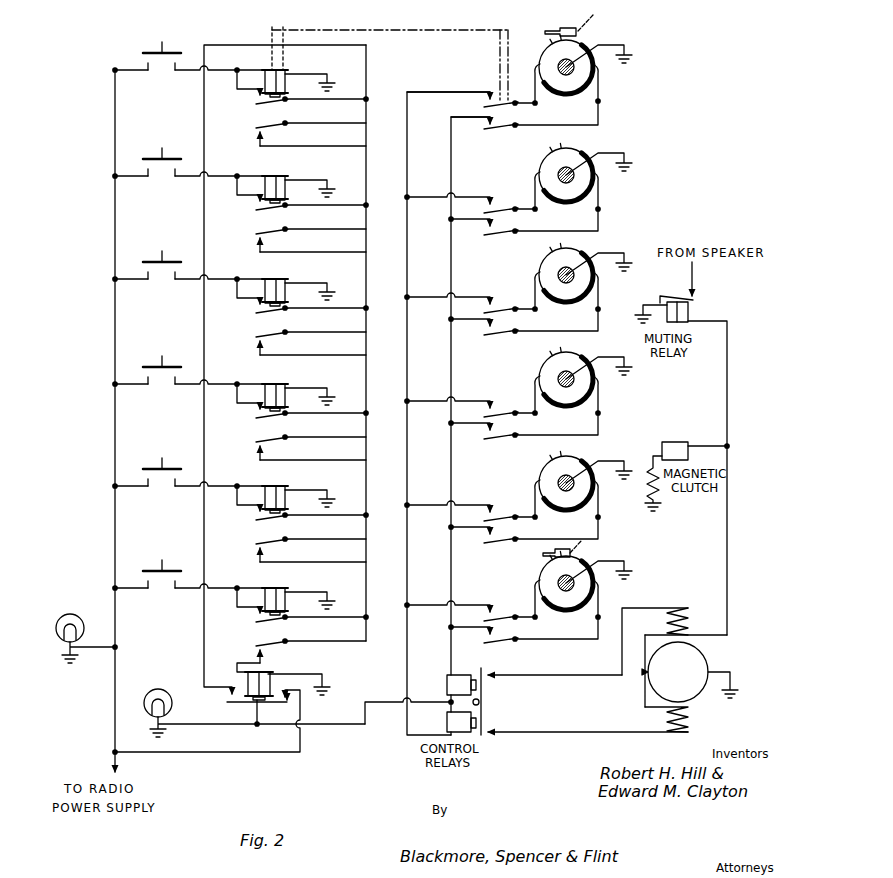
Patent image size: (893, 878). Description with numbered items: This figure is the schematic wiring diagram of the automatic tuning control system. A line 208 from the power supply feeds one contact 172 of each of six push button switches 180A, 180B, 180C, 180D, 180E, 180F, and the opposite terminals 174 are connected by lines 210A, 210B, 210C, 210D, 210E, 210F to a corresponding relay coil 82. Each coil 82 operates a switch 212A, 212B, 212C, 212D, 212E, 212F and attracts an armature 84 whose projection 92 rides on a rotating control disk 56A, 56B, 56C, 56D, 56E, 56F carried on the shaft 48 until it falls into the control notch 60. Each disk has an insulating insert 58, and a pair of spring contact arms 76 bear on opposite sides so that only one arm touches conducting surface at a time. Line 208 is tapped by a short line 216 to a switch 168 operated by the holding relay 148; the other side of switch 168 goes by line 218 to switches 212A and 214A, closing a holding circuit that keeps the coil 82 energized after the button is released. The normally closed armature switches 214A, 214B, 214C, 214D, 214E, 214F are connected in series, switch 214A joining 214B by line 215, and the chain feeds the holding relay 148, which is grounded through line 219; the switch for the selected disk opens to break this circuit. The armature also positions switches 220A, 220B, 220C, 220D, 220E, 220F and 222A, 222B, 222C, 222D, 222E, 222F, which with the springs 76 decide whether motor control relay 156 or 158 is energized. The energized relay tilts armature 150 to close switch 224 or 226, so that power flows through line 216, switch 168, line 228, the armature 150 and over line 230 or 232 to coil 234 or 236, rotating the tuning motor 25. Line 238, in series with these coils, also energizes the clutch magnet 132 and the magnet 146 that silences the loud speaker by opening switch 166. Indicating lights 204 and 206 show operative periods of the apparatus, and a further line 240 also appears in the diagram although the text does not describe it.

The tuning motor 25 is at (700, 666).
The shaft 48 is at (568, 95).
The rotating control disk 56A is at (585, 52).
The rotating control disk 56B is at (577, 151).
The rotating control disk 56C is at (585, 265).
The rotating control disk 56D is at (585, 369).
The rotating control disk 56E is at (585, 473).
The rotating control disk 56F is at (585, 573).
The insert 58 is at (602, 99).
The control notch 60 is at (558, 40).
The spring contact arms 76 is at (537, 74).
The relay coil 82 is at (284, 70).
The armature 84 is at (566, 31).
The projection 92 is at (595, 276).
The magnet 132 is at (675, 442).
The magnet 146 is at (683, 308).
The holding relay 148 is at (252, 684).
The tilting armature 150 is at (480, 702).
The motor control relay 156 is at (447, 724).
The motor control relay 158 is at (447, 684).
The switch 166 is at (690, 297).
The switch 168 is at (290, 696).
The contact 172 is at (146, 64).
The terminal 174 is at (189, 53).
The control button 180A is at (162, 43).
The control button 180B is at (166, 138).
The control button 180C is at (167, 241).
The control button 180D is at (167, 346).
The control button 180E is at (166, 448).
The control button 180F is at (166, 550).
The indicating light 204 is at (85, 613).
The indicating light 206 is at (176, 692).
The line 208 is at (113, 226).
The line 210A is at (206, 72).
The line 210B is at (189, 166).
The line 210C is at (189, 269).
The line 210D is at (189, 374).
The line 210E is at (189, 476).
The line 210F is at (189, 578).
The switch 212A is at (291, 102).
The switch 212B is at (302, 202).
The switch 212C is at (302, 305).
The switch 212D is at (302, 410).
The switch 212E is at (302, 512).
The switch 212F is at (302, 614).
The switch 214A is at (292, 126).
The switch 214B is at (311, 239).
The switch 214C is at (311, 342).
The switch 214D is at (311, 447).
The switch 214E is at (311, 549).
The switch 214F is at (301, 655).
The line 215 is at (411, 120).
The tap line 216 is at (298, 755).
The line 218 is at (203, 650).
The line 219 is at (326, 684).
The switch 220A is at (473, 89).
The switch 220B is at (498, 208).
The switch 220C is at (472, 292).
The switch 220D is at (472, 396).
The switch 220E is at (472, 500).
The switch 220F is at (472, 600).
The switch 222A is at (525, 109).
The switch 222B is at (505, 243).
The switch 222C is at (524, 315).
The switch 222D is at (524, 419).
The switch 222E is at (524, 523).
The switch 222F is at (524, 623).
The switch 224 is at (487, 735).
The switch 226 is at (488, 678).
The line 228 is at (366, 720).
The line 230 is at (590, 733).
The line 232 is at (620, 668).
The coil 234 is at (688, 715).
The coil 236 is at (686, 616).
The line 238 is at (728, 524).
The conductor 240 is at (448, 413).